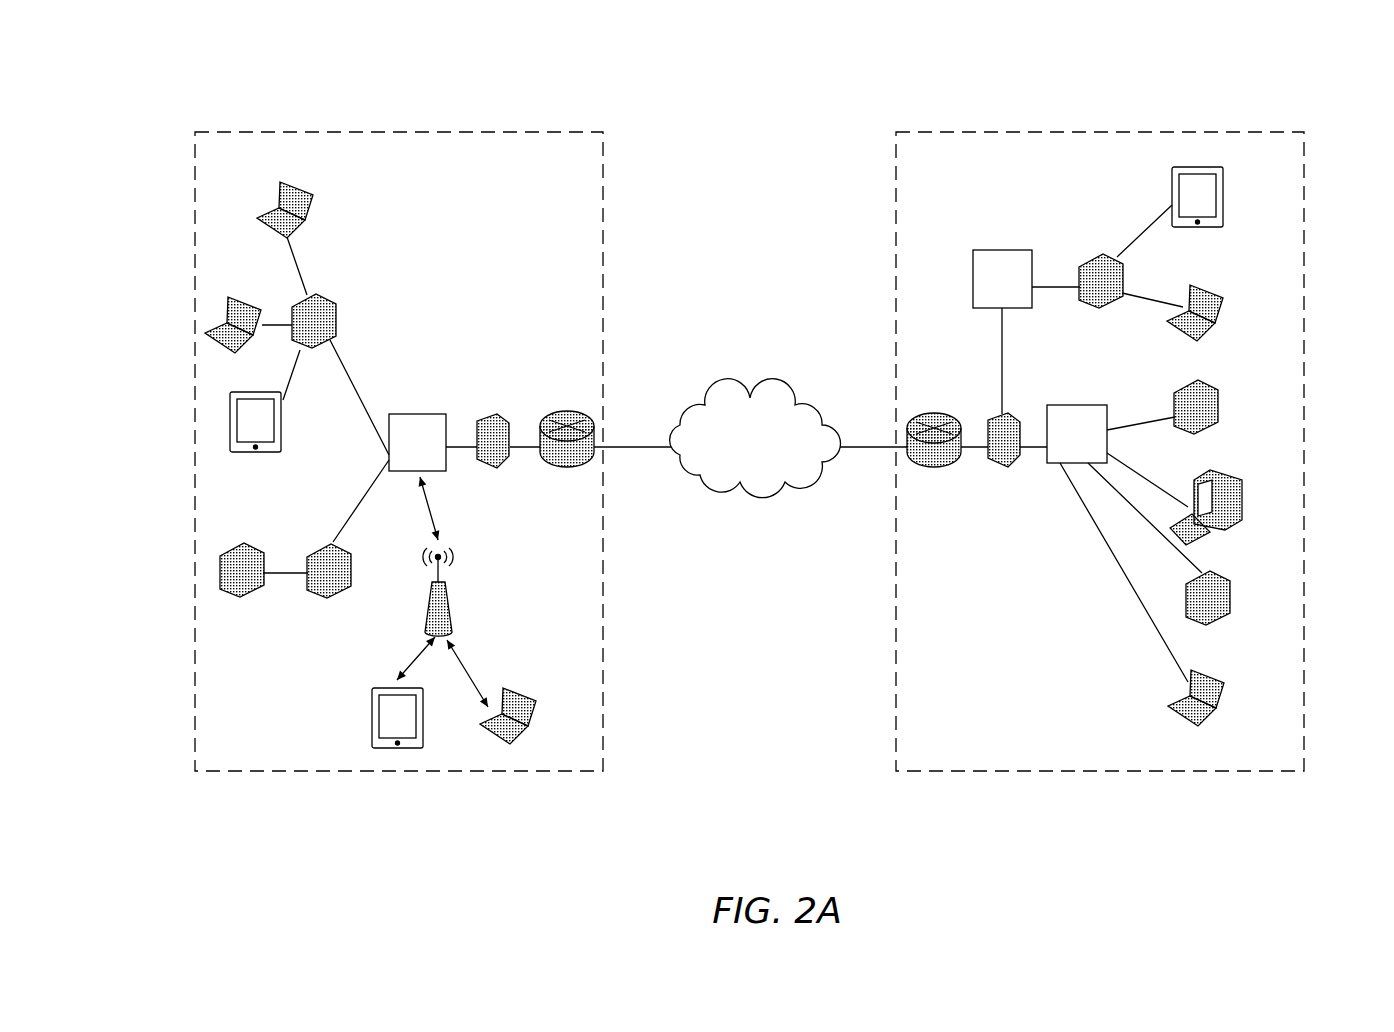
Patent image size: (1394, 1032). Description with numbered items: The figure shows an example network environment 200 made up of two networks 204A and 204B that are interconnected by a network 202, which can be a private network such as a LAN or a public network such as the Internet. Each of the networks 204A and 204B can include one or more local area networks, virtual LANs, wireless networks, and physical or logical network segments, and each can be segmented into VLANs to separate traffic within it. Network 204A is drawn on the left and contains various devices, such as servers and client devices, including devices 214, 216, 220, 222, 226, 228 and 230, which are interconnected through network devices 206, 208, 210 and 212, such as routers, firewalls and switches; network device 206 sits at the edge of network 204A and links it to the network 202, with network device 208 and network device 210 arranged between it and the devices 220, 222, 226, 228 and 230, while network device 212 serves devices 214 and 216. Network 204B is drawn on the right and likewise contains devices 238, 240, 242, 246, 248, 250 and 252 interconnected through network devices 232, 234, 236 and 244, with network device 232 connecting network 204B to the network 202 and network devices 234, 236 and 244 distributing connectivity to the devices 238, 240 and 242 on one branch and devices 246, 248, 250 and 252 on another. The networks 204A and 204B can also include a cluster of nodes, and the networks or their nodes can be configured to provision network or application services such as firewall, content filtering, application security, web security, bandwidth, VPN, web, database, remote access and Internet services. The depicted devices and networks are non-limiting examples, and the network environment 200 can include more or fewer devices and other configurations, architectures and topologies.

The network environment 200 is at (268, 38).
The network 202 is at (758, 392).
The network 204A is at (478, 132).
The network 204B is at (965, 132).
The network device 206 is at (567, 417).
The network device 208 is at (498, 418).
The network device 210 is at (417, 442).
The network device 212 is at (450, 600).
The device 214 is at (537, 725).
The device 216 is at (372, 723).
The device 220 is at (323, 600).
The device 222 is at (222, 578).
The device 226 is at (255, 219).
The device 228 is at (207, 330).
The device 230 is at (230, 422).
The network device 232 is at (933, 410).
The network device 234 is at (1008, 467).
The network device 236 is at (1002, 279).
The device 238 is at (1103, 255).
The device 240 is at (1203, 165).
The device 242 is at (1223, 302).
The network device 244 is at (1077, 434).
The device 246 is at (1217, 400).
The device 248 is at (1240, 500).
The device 250 is at (1230, 595).
The device 252 is at (1225, 697).